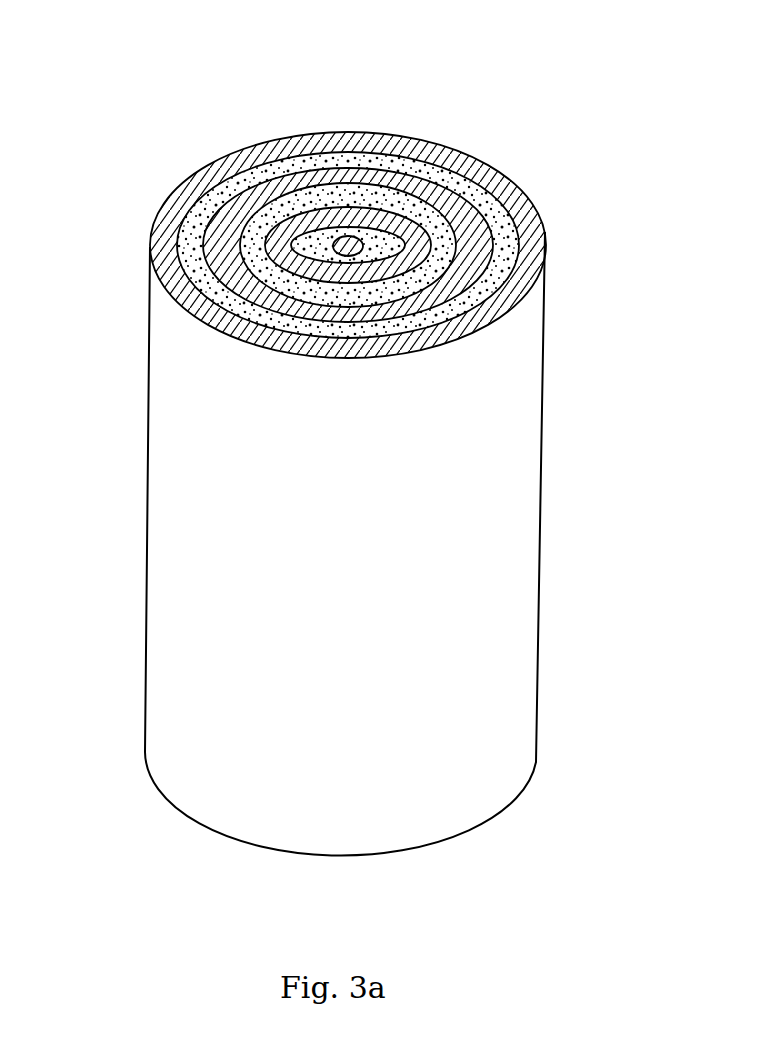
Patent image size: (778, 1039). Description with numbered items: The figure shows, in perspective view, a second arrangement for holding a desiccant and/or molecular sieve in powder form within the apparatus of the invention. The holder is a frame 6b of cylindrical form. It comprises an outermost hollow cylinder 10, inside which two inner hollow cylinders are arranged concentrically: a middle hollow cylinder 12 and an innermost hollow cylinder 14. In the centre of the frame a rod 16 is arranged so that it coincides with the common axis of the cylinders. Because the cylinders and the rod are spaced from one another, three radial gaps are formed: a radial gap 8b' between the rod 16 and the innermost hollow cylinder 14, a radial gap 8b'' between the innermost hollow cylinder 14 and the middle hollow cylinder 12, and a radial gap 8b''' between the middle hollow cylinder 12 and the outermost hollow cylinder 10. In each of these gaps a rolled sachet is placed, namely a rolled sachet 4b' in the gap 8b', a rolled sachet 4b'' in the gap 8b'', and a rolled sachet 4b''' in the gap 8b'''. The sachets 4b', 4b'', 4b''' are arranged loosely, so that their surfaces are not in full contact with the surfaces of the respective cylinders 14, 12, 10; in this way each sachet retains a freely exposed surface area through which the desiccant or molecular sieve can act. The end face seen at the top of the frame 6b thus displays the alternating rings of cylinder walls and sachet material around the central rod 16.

The frame 6b is at (395, 130).
The outermost hollow cylinder 10 is at (477, 160).
The middle hollow cylinder 12 is at (480, 205).
The innermost hollow cylinder 14 is at (243, 272).
The rod 16 is at (497, 313).
The rolled sachet 4b' is at (434, 245).
The rolled sachet 4b'' is at (424, 245).
The rolled sachet 4b''' is at (409, 245).
The radial gap 8b' is at (234, 237).
The radial gap 8b'' is at (332, 243).
The radial gap 8b''' is at (348, 217).